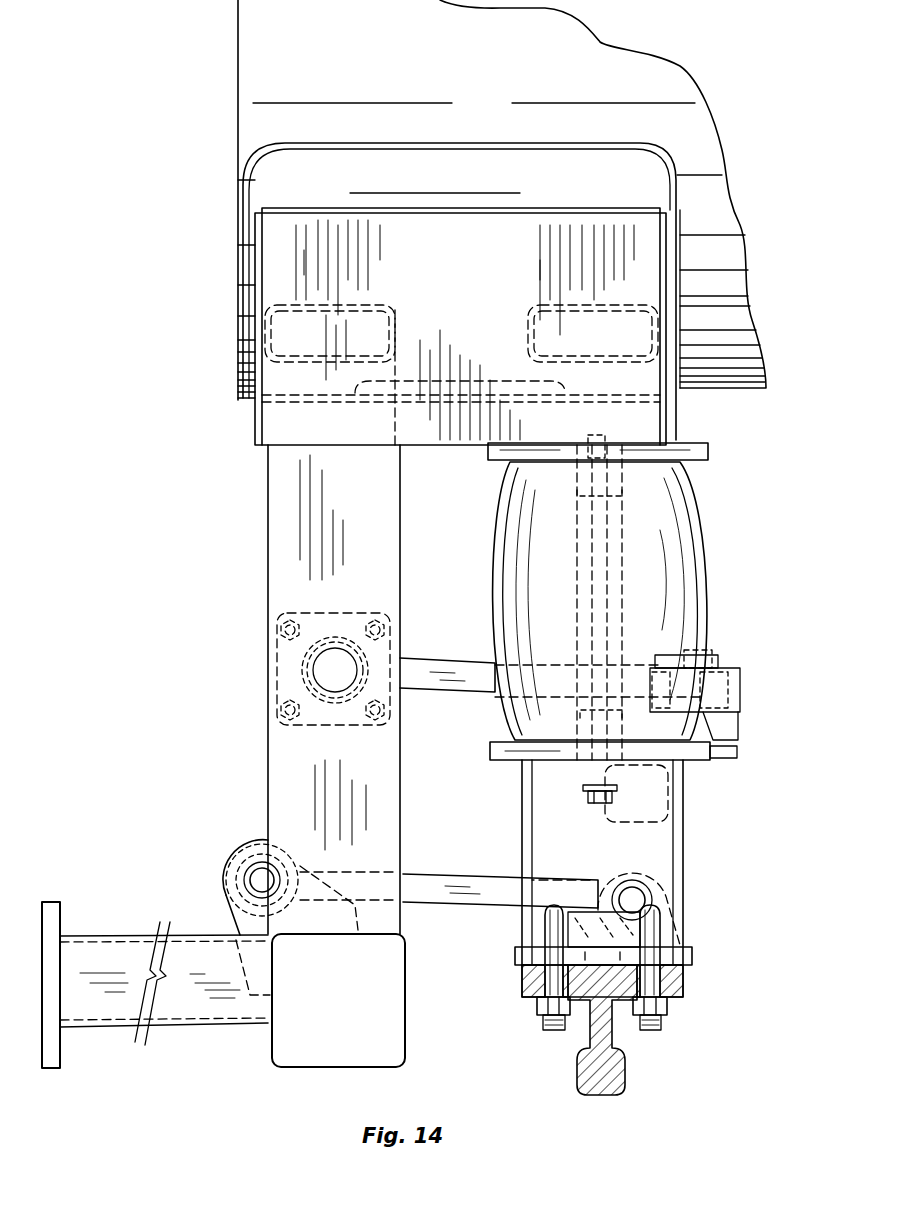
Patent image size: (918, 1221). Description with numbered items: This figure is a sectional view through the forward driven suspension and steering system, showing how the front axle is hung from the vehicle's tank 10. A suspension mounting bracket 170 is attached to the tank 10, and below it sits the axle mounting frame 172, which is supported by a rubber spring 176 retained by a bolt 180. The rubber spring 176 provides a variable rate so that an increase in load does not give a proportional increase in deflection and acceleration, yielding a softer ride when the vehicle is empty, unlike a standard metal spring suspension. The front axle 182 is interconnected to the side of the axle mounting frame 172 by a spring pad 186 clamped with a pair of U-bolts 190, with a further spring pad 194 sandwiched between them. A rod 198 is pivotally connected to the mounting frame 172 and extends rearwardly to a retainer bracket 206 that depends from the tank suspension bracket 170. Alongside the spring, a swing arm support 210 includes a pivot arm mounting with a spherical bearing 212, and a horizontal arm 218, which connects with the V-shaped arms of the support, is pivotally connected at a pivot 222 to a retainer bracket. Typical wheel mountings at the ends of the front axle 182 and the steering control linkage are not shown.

The tank 10 is at (708, 392).
The suspension mounting bracket 170 is at (464, 274).
The axle mounting frame 172 is at (686, 835).
The rubber spring 176 is at (705, 548).
The bolt 180 is at (603, 810).
The front axle 182 is at (626, 1082).
The spring pad 186 is at (690, 946).
The U-bolts 190 is at (552, 1031).
The spring pad 194 is at (686, 973).
The rod 198 is at (458, 874).
The retainer bracket 206 is at (322, 840).
The swing arm support 210 is at (437, 697).
The spherical bearing 212 is at (703, 665).
The horizontal arm 218 is at (302, 672).
The pivot connection 222 is at (393, 640).